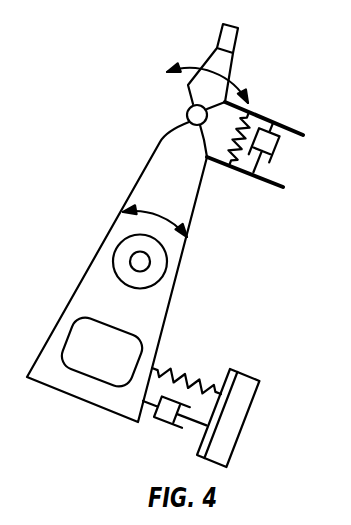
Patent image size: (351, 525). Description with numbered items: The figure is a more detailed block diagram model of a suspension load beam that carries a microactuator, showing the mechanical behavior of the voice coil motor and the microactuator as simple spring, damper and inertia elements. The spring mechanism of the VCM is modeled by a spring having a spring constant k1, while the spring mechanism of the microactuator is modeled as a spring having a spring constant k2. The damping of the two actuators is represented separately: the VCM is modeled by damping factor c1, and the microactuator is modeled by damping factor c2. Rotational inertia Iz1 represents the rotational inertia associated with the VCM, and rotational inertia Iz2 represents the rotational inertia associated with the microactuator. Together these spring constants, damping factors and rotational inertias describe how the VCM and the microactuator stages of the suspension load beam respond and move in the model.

The rotational inertia of the microactuator Iz2 is at (217, 80).
The rotational inertia of the VCM Iz1 is at (155, 210).
The spring constant of the microactuator k2 is at (240, 160).
The damping factor of the microactuator c2 is at (269, 171).
The spring constant of the VCM k1 is at (186, 368).
The damping factor of the VCM c1 is at (174, 426).